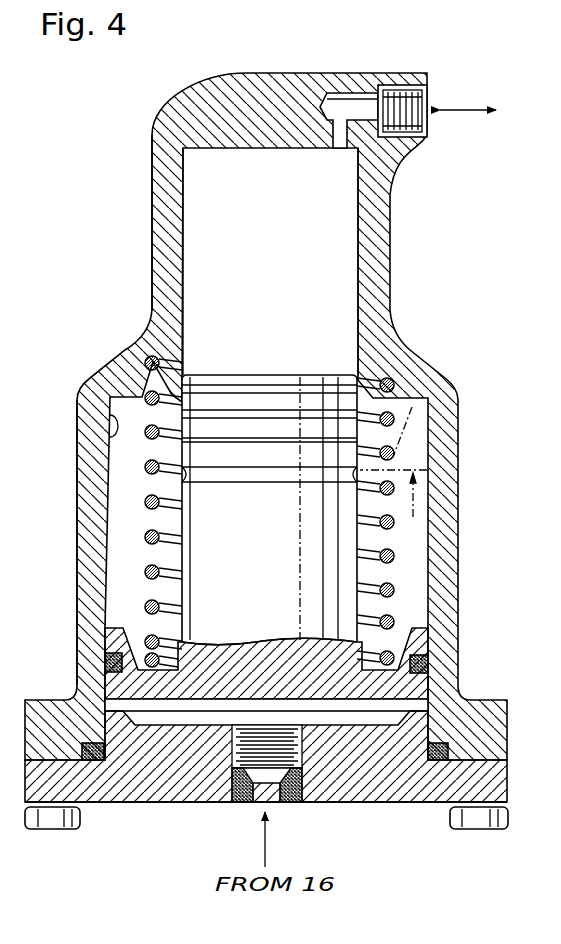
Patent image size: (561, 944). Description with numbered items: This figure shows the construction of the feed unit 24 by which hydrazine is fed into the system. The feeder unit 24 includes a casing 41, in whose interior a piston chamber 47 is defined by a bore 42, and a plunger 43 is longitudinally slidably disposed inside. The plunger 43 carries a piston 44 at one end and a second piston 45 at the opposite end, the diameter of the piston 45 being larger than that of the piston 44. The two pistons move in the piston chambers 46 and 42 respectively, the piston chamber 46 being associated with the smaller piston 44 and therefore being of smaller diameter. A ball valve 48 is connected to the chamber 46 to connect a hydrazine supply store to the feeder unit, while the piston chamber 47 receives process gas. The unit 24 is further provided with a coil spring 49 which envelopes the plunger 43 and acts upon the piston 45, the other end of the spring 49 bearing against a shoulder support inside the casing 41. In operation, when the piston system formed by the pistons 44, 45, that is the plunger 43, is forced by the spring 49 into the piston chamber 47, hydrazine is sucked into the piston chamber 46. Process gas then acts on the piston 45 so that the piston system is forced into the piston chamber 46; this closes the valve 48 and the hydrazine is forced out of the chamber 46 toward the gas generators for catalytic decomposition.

The feed unit 24 is at (140, 228).
The casing 41 is at (160, 313).
The bore 42 is at (108, 418).
The plunger 43 is at (200, 560).
The piston 44 is at (315, 388).
The second piston 45 is at (135, 690).
The piston chamber 46 is at (347, 252).
The piston chamber 47 is at (383, 717).
The ball valve 48 is at (408, 95).
The coil spring 49 is at (380, 390).